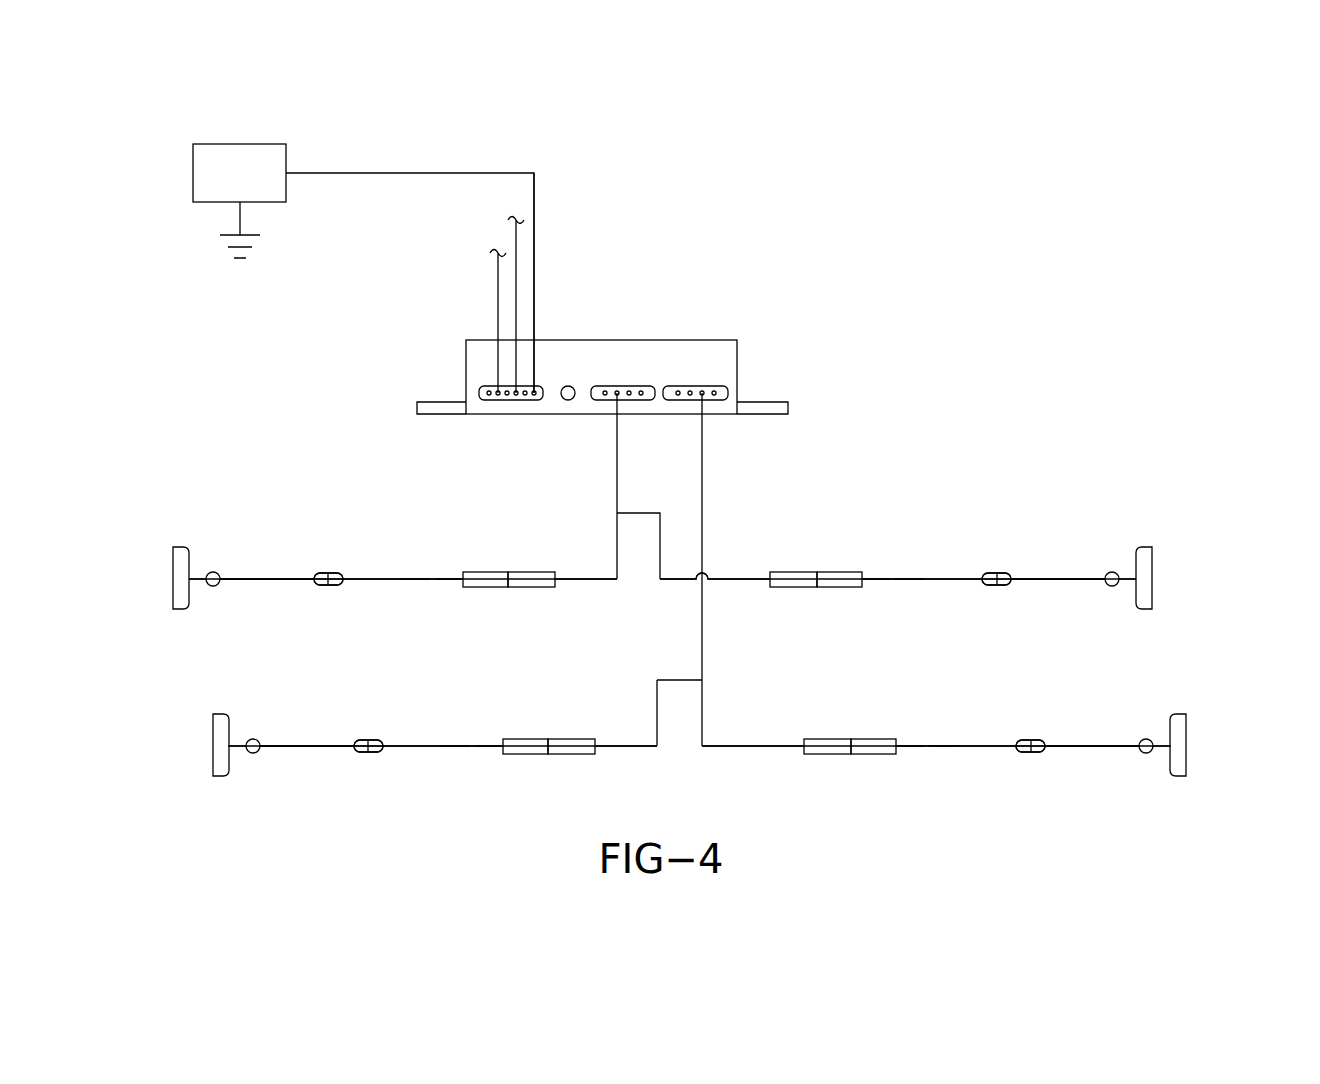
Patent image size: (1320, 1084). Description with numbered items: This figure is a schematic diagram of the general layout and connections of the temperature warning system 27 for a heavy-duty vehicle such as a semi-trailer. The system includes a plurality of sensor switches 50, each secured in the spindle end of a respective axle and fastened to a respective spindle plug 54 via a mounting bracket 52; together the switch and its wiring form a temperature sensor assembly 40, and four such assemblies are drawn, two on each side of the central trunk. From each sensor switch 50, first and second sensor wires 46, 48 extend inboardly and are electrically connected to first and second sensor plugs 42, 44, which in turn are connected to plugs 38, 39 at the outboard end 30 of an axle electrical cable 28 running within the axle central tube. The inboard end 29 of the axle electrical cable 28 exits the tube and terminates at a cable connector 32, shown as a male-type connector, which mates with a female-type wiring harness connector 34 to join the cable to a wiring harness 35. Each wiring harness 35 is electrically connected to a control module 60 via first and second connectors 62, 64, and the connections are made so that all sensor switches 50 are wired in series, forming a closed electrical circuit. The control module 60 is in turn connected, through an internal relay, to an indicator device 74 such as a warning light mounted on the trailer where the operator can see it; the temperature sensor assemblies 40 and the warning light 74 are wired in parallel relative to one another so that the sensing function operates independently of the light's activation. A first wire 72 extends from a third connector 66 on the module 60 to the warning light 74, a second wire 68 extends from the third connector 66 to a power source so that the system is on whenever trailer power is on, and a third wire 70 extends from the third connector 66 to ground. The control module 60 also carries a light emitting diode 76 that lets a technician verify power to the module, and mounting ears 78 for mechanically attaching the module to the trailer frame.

The temperature warning system 27 is at (940, 392).
The axle electrical cable 28 is at (414, 583).
The inboard end 29 is at (447, 583).
The outboard end 30 is at (388, 578).
The cable connector 32 is at (487, 572).
The wiring harness connector 34 is at (532, 572).
The wiring harness 35 is at (587, 583).
The plug 38 is at (333, 573).
The plug 39 is at (334, 586).
The temperature sensor assembly 40 is at (246, 497).
The first sensor plug 42 is at (322, 573).
The second sensor plug 44 is at (322, 586).
The first sensor wire 46 is at (259, 584).
The second sensor wire 48 is at (259, 584).
The sensor switch 50 is at (214, 572).
The mounting bracket 52 is at (198, 585).
The spindle plug 54 is at (181, 547).
The control module 60 is at (690, 340).
The first connector 62 is at (688, 400).
The second connector 64 is at (644, 400).
The third connector 66 is at (497, 400).
The second wire 68 is at (498, 290).
The third wire 70 is at (516, 235).
The first wire 72 is at (534, 267).
The indicator device 74 is at (240, 144).
The light emitting diode 76 is at (568, 400).
The mounting ears 78 is at (442, 402).